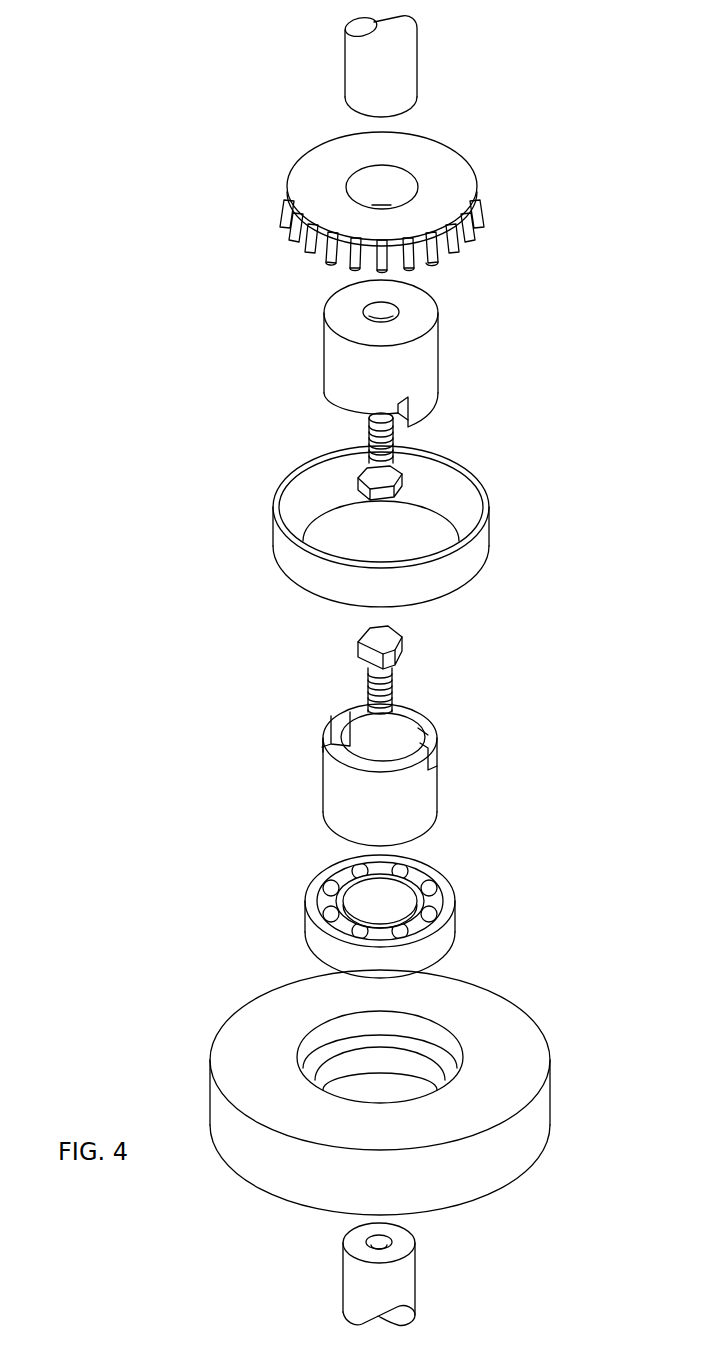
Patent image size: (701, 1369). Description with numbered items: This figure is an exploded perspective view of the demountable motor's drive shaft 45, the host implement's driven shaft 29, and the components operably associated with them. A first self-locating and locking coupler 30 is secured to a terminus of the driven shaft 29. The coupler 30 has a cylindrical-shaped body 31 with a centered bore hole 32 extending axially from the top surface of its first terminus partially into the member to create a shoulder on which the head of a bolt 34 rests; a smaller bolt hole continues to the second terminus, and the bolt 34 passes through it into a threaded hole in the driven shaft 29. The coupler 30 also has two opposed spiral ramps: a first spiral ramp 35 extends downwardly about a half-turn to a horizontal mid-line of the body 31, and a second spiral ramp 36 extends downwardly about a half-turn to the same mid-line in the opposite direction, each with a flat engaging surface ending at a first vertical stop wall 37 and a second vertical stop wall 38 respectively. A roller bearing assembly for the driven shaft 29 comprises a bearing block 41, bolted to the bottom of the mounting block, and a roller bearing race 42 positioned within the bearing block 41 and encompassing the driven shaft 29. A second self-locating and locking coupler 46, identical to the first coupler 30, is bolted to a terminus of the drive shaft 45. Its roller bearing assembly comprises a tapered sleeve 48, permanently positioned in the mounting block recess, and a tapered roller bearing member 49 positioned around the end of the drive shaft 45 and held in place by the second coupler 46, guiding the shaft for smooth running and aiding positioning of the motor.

The driven shaft 29 is at (410, 1282).
The first self-locating and locking coupler 30 is at (432, 820).
The cylindrical-shaped body 31 is at (433, 792).
The centered bore hole 32 is at (385, 730).
The bolt 34 is at (405, 652).
The first spiral ramp 35 is at (332, 753).
The second spiral ramp 36 is at (425, 735).
The first vertical stop wall 37 is at (332, 717).
The second vertical stop wall 38 is at (433, 760).
The bearing block 41 is at (547, 1103).
The roller bearing race 42 is at (450, 942).
The drive shaft 45 is at (413, 67).
The second self-locating and locking coupler 46 is at (433, 365).
The tapered sleeve 48 is at (483, 545).
The tapered roller bearing member 49 is at (470, 177).